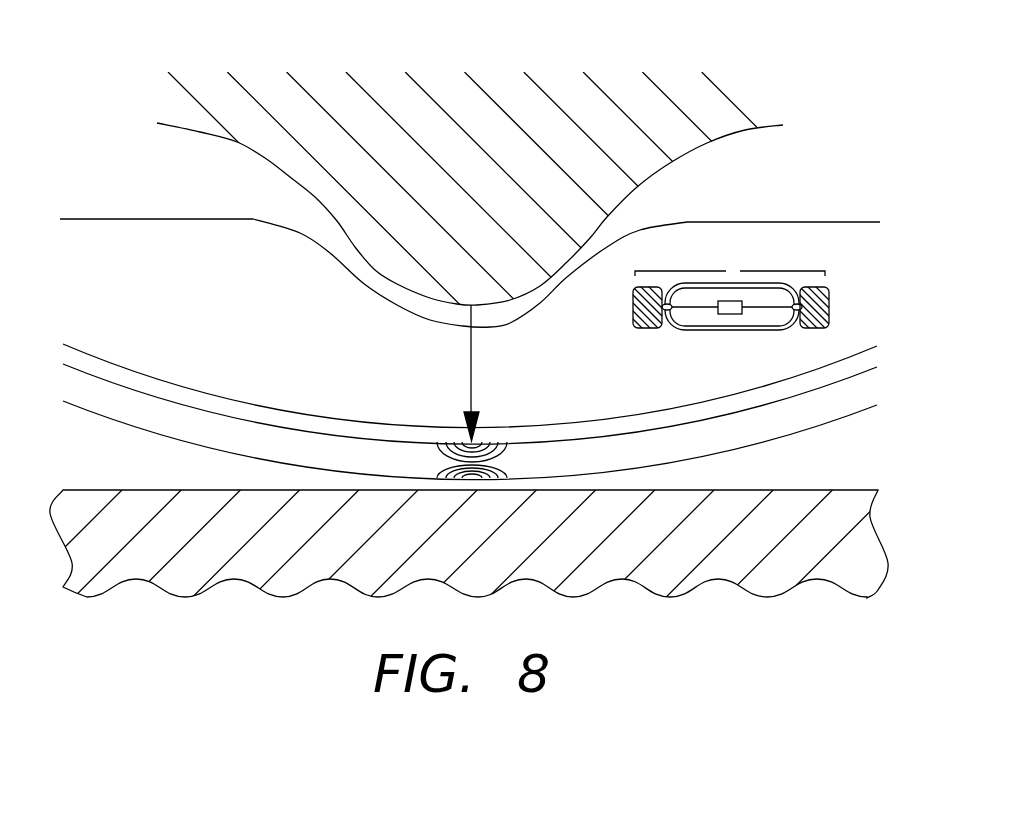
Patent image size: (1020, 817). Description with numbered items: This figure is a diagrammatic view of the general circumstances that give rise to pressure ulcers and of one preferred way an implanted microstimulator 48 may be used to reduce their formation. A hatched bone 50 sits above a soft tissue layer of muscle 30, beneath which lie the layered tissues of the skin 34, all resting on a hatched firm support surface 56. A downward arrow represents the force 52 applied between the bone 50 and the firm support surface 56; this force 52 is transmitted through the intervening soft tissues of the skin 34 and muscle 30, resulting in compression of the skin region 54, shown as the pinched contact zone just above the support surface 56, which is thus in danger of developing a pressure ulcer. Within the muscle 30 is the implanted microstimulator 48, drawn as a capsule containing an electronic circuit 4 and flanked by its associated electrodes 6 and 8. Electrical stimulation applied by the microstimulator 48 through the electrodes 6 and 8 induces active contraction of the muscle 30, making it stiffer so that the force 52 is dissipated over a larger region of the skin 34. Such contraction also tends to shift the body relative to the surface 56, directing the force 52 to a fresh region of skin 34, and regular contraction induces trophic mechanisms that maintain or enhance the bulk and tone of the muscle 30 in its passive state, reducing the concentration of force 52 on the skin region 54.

The electronic circuit 4 is at (728, 314).
The electrode 6 is at (643, 329).
The electrode 8 is at (816, 329).
The muscle 30 is at (290, 326).
The skin 34 is at (331, 461).
The microstimulator 48 is at (728, 312).
The bone 50 is at (461, 213).
The force 52 is at (470, 362).
The skin region 54 is at (471, 462).
The firm support surface 56 is at (411, 556).